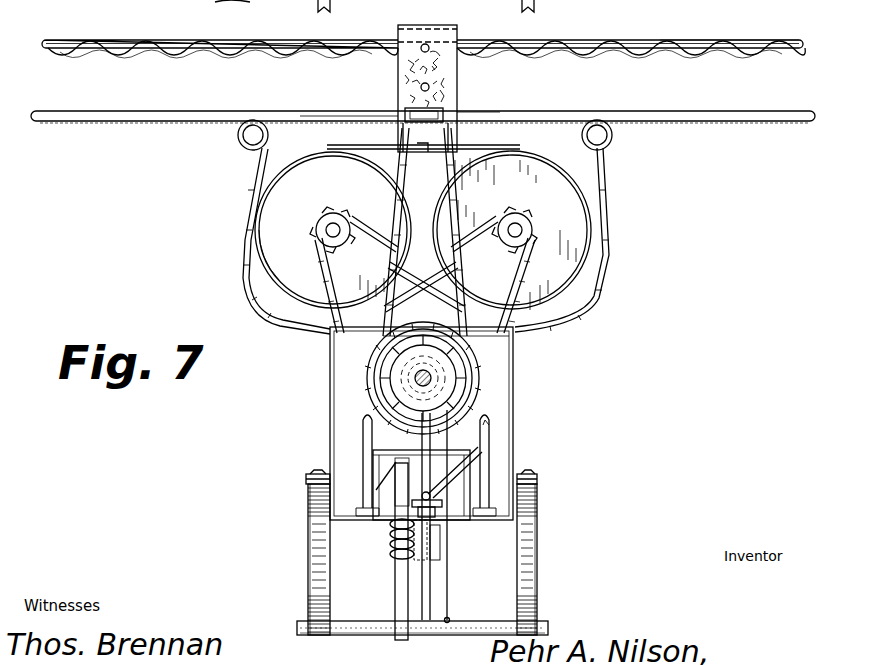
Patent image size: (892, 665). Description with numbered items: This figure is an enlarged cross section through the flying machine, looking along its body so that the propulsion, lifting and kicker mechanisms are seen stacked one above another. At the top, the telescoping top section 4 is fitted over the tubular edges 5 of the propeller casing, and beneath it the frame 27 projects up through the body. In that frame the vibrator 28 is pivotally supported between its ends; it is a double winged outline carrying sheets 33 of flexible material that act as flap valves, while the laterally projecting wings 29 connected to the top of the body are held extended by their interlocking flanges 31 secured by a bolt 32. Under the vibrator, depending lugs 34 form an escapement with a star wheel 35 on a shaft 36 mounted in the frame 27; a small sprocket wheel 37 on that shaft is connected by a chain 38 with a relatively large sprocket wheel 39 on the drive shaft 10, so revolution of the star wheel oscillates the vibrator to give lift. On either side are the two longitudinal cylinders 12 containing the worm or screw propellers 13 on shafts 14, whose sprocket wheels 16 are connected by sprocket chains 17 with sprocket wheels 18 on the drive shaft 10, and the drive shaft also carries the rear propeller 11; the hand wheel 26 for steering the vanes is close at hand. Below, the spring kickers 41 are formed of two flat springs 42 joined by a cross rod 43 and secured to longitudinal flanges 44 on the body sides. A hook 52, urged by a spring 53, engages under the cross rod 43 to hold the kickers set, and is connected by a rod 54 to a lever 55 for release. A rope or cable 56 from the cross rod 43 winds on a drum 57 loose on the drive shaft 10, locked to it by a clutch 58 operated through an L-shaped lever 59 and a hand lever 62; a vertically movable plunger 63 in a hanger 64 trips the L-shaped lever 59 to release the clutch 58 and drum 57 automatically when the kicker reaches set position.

The telescoping top section 4 is at (320, 113).
The tubular edges 5 is at (243, 146).
The drive shaft 10 is at (470, 383).
The propeller 11 is at (265, 284).
The longitudinal cylinders 12 is at (262, 262).
The worm or screw propellers 13 is at (278, 237).
The shafts 14 is at (324, 230).
The sprocket wheels 16 is at (330, 212).
The sprocket chains 17 is at (330, 318).
The sprocket wheels 18 is at (390, 396).
The hand wheel 26 is at (665, 44).
The frame 27 is at (447, 33).
The vibrator 28 is at (137, 41).
The wings 29 is at (118, 121).
The interlocking flanges 31 is at (496, 102).
The bolt 32 is at (405, 113).
The sheets of flexible material 33 is at (190, 56).
The depending lugs 34 is at (421, 50).
The star wheel 35 is at (435, 56).
The shaft 36 is at (421, 88).
The small sprocket wheel 37 is at (443, 96).
The chain 38 is at (470, 330).
The large sprocket wheel 39 is at (345, 328).
The spring kickers 41 is at (308, 603).
The flat springs 42 is at (308, 548).
The cross rod 43 is at (380, 632).
The longitudinal flanges 44 is at (306, 478).
The hook 52 is at (395, 606).
The spring 53 is at (389, 540).
The rod 54 is at (380, 478).
The lever 55 is at (363, 432).
The rope or cable 56 is at (449, 600).
The drum 57 is at (448, 374).
The clutch 58 is at (415, 378).
The L-shaped lever 59 is at (480, 450).
The hand lever 62 is at (489, 426).
The plunger 63 is at (430, 576).
The hanger 64 is at (440, 543).